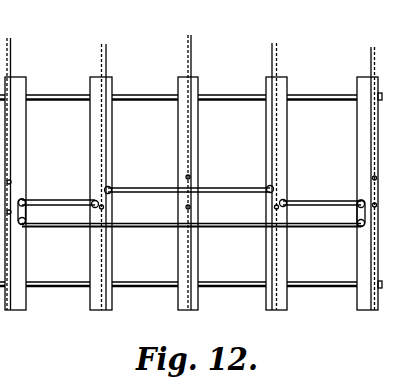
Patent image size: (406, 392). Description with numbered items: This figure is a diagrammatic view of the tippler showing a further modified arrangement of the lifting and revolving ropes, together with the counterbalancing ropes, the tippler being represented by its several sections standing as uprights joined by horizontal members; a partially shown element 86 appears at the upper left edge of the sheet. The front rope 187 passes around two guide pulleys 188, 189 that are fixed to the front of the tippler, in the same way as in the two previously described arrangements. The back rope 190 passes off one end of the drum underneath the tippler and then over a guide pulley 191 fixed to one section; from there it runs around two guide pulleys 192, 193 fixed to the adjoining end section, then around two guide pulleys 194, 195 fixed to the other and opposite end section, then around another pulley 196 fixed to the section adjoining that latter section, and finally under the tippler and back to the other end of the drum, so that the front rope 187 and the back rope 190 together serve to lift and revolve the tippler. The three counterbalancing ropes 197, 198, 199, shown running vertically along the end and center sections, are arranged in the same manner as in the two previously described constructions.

The frame member 86 is at (7, 12).
The front rope 187 is at (107, 61).
The guide pulley 188 is at (110, 188).
The guide pulley 189 is at (267, 187).
The back rope 190 is at (99, 49).
The guide pulley 191 is at (92, 205).
The guide pulley 192 is at (24, 198).
The guide pulley 193 is at (24, 225).
The guide pulley 194 is at (357, 226).
The guide pulley 195 is at (356, 206).
The pulley 196 is at (280, 205).
The counterbalancing rope 197 is at (11, 61).
The counterbalancing rope 198 is at (191, 63).
The counterbalancing rope 199 is at (371, 59).